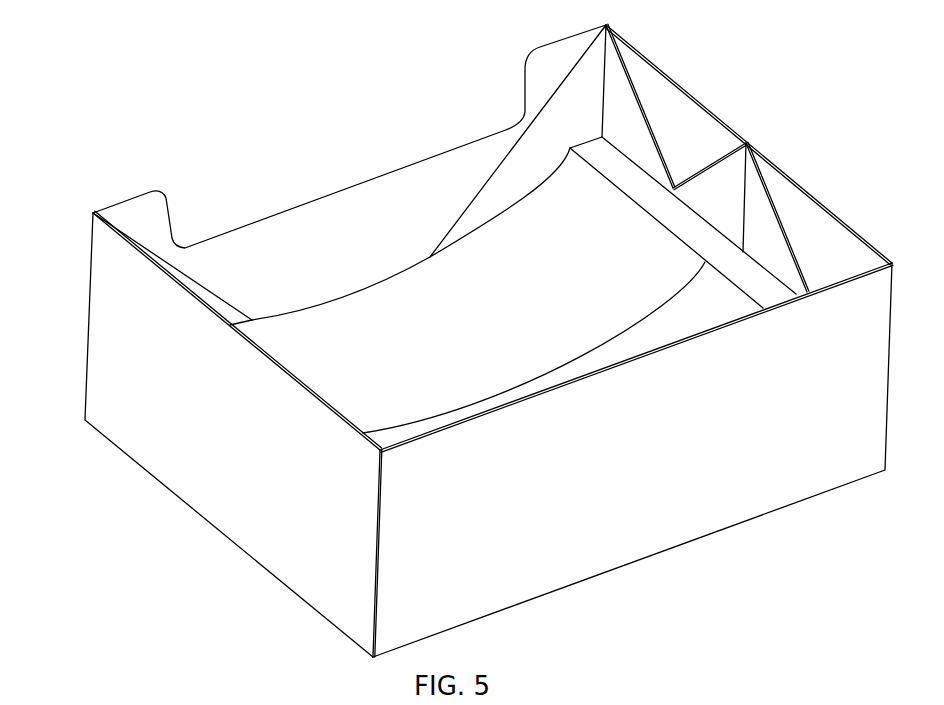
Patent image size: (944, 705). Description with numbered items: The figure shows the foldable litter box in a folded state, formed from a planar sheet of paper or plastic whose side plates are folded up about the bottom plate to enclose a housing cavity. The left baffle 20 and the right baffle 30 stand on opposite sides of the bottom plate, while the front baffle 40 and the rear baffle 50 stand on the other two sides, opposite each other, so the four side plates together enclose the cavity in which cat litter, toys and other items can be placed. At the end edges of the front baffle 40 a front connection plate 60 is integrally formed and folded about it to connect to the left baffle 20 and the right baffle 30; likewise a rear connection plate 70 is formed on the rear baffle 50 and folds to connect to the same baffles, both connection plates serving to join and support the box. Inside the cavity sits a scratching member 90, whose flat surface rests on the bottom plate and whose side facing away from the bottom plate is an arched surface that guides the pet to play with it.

The left baffle 20 is at (363, 213).
The right baffle 30 is at (663, 530).
The front baffle 40 is at (172, 458).
The rear baffle 50 is at (697, 133).
The front connection plate 60 is at (198, 285).
The rear connection plate 70 is at (537, 153).
The scratching member 90 is at (722, 300).